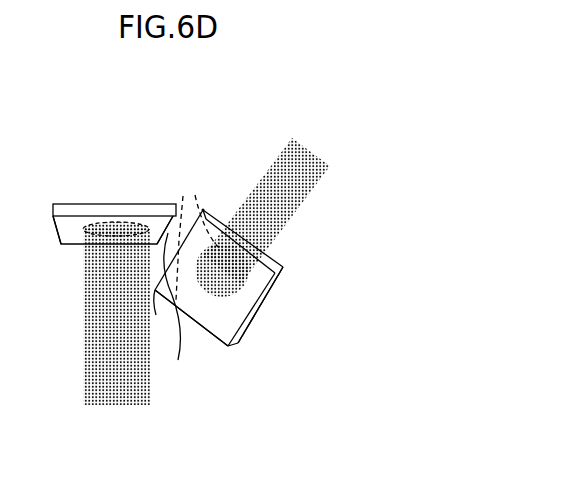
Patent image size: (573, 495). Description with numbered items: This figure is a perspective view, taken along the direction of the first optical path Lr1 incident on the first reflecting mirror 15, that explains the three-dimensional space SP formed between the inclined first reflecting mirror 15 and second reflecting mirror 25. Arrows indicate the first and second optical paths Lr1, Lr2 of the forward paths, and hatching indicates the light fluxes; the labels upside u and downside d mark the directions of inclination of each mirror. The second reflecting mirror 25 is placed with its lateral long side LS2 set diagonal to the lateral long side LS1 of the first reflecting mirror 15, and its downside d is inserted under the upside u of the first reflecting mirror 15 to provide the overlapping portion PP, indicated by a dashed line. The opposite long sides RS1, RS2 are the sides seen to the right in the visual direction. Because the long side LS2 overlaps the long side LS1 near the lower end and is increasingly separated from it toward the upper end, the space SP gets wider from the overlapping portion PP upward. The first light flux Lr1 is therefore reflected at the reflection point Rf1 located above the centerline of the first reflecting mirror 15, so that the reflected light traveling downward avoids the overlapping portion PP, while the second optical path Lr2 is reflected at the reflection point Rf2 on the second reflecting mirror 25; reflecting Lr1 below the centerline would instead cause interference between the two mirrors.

The first reflecting mirror 15 is at (85, 204).
The second reflecting mirror 25 is at (243, 340).
The first optical path Lr1 is at (116, 268).
The second optical path Lr2 is at (267, 224).
The reflection point of first optical axis Rf1 is at (110, 227).
The reflection point of second optical axis Rf2 is at (284, 266).
The long side RS1 of first reflecting mirror RS1 is at (55, 235).
The long side RS2 of second reflecting mirror RS2 is at (264, 303).
The long side LS1 of first reflecting mirror LS1 is at (176, 206).
The long side LS2 of second reflecting mirror LS2 is at (185, 240).
The space SP is at (205, 207).
The overlapping portion PP is at (178, 360).
The upside u is at (197, 236).
The downside d is at (162, 312).